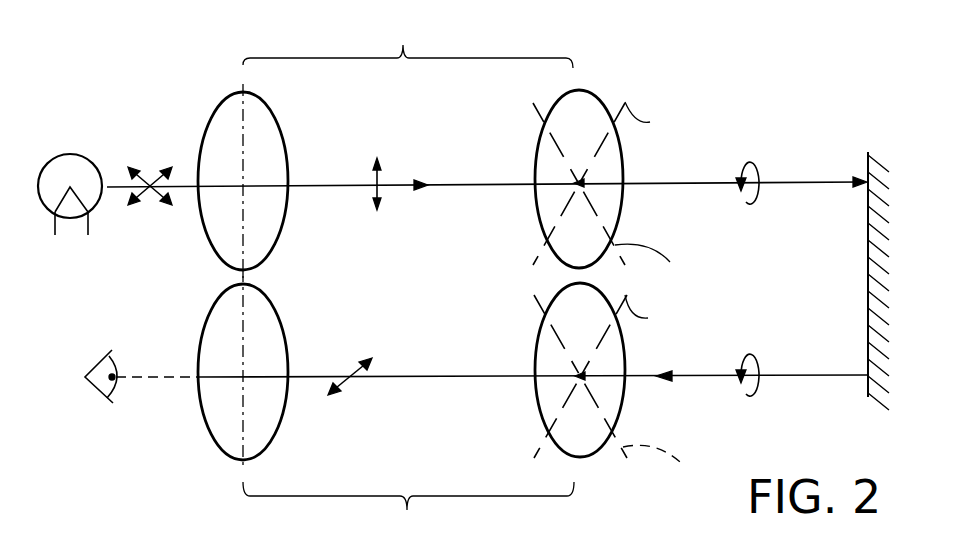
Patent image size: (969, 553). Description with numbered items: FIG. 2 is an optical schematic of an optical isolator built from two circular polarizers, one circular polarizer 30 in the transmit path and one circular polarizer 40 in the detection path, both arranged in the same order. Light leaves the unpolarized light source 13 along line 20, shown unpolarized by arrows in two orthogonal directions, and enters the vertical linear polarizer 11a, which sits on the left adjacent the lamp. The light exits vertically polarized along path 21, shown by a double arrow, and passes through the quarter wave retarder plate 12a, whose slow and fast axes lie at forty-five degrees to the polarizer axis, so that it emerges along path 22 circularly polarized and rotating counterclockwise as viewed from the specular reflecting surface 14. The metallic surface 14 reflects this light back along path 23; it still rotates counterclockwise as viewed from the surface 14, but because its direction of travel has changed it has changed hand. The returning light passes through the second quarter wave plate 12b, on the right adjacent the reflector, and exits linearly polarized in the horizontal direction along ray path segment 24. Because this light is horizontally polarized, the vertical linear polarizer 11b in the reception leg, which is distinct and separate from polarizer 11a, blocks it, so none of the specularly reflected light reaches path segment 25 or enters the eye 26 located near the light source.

The light source 13 is at (52, 155).
The unpolarized light path 20 is at (192, 182).
The linear polarizer 11a is at (220, 107).
The circular polarizer 30 is at (408, 41).
The vertically polarized light path 21 is at (502, 183).
The quarter wave retarder plate 12a is at (600, 98).
The circularly polarized light path 22 is at (825, 180).
The specular reflecting surface 14 is at (867, 302).
The reflected light path 23 is at (845, 377).
The quarter wave retarder plate 12b is at (550, 308).
The horizontally polarized light path 24 is at (498, 377).
The linear polarizer 11b is at (268, 295).
The circular polarizer 40 is at (408, 511).
The path segment to the eye 25 is at (133, 380).
The eye 26 is at (102, 393).